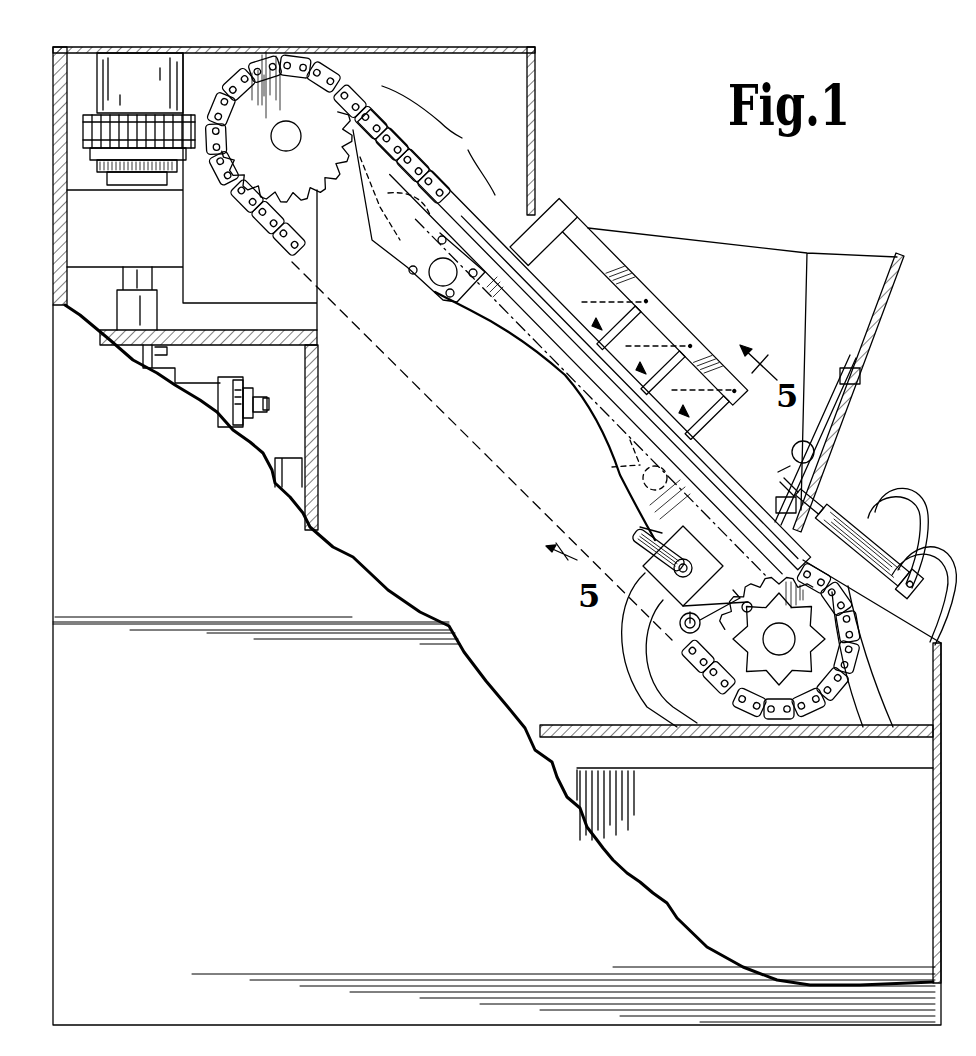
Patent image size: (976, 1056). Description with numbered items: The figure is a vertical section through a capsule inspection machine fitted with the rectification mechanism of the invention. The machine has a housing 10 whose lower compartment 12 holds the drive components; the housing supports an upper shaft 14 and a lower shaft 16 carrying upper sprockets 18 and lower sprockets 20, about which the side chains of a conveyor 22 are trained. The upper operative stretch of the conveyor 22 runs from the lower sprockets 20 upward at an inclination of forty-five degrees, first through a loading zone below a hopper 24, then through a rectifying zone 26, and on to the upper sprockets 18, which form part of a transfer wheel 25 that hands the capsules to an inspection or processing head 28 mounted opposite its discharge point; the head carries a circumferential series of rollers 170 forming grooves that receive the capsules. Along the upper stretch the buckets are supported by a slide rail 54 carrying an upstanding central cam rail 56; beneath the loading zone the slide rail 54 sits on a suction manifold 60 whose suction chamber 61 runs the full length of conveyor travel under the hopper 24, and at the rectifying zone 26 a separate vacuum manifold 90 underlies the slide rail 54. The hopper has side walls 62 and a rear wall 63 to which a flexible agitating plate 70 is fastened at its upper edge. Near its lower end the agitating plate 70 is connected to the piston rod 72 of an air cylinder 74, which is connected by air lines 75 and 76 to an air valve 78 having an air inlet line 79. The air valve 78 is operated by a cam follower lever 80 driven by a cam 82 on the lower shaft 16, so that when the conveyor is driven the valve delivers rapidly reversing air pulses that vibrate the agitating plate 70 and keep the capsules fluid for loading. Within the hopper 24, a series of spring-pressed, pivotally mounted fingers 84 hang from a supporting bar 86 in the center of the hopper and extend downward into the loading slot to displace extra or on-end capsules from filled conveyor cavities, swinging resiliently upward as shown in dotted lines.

The housing 10 is at (538, 115).
The lower compartment 12 is at (678, 825).
The upper shaft 14 is at (294, 130).
The lower shaft 16 is at (778, 648).
The upper sprockets 18 is at (327, 168).
The lower sprockets 20 is at (812, 675).
The conveyor 22 is at (375, 112).
The hopper 24 is at (753, 258).
The transfer wheel 25 is at (281, 90).
The rectifying zone 26 is at (438, 140).
The inspection or processing head 28 is at (134, 103).
The slide rail 54 is at (642, 417).
The cam rail 56 is at (700, 462).
The suction manifold 60 is at (587, 402).
The suction chamber 61 is at (607, 465).
The hopper side walls 62 is at (758, 301).
The rear wall 63 is at (880, 315).
The agitating plate 70 is at (830, 442).
The piston rod 72 is at (828, 500).
The air cylinder 74 is at (870, 540).
The air line 75 is at (912, 528).
The air line 76 is at (940, 617).
The air valve 78 is at (647, 563).
The air inlet line 79 is at (637, 532).
The cam follower lever 80 is at (735, 640).
The cam 82 is at (752, 667).
The fingers 84 is at (717, 413).
The supporting bar 86 is at (610, 263).
The vacuum manifold 90 is at (395, 262).
The rollers 170 is at (83, 128).